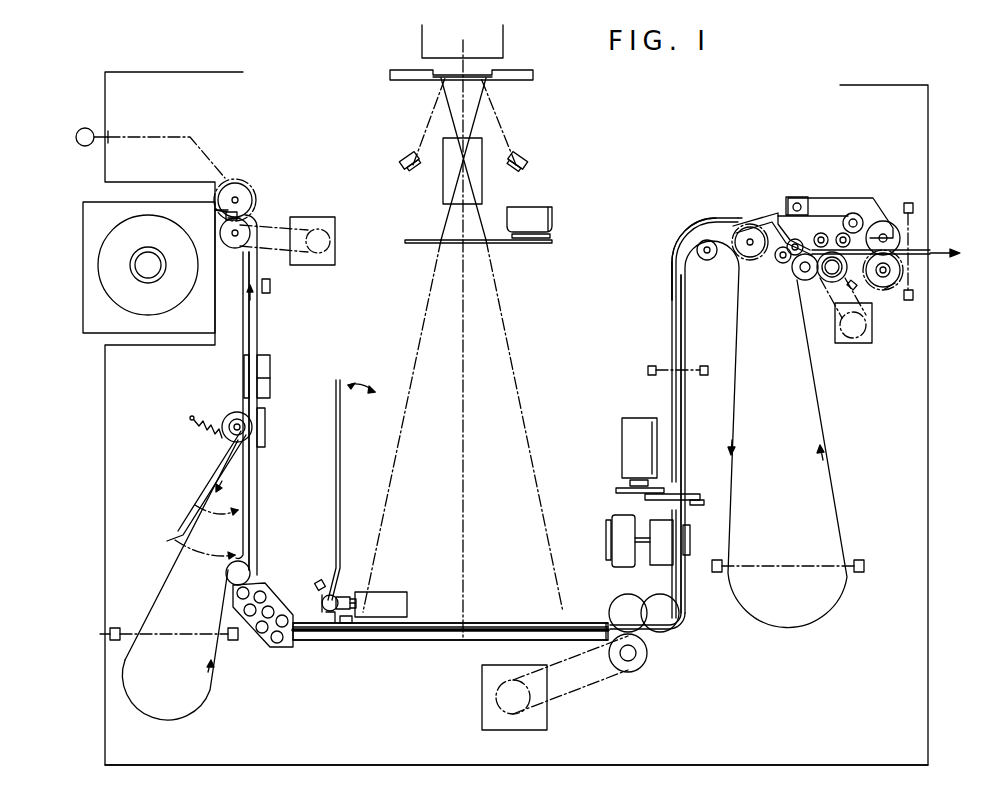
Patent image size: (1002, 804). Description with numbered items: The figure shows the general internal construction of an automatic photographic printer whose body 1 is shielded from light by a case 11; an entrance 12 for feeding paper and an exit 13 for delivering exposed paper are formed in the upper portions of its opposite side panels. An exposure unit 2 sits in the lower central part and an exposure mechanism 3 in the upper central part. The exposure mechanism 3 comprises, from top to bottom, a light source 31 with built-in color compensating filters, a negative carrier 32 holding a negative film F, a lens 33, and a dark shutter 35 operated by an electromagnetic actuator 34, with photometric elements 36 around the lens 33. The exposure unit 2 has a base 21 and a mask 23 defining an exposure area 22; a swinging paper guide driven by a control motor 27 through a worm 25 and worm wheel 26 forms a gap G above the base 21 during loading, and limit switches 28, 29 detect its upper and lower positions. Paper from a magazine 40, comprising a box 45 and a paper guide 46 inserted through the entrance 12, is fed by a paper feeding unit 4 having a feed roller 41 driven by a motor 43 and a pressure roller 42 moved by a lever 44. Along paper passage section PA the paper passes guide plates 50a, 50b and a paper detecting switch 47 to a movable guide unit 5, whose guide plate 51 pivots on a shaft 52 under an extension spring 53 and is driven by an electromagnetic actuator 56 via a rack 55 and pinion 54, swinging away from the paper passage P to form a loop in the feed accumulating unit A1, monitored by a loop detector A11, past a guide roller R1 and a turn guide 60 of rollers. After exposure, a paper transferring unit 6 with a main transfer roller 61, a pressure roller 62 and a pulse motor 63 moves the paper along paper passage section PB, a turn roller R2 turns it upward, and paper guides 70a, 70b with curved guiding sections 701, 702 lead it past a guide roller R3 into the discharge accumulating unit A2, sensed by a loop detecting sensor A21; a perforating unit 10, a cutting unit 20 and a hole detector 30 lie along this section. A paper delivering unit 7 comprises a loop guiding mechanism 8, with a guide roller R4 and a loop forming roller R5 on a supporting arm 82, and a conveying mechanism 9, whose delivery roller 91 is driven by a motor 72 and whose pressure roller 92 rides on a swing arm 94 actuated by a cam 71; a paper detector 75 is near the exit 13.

The body 1 is at (950, 152).
The exposure unit 2 is at (407, 650).
The exposure mechanism 3 is at (553, 183).
The paper feeding unit 4 is at (275, 197).
The movable guide unit 5 is at (288, 418).
The paper transferring unit 6 is at (665, 668).
The paper delivering unit 7 is at (752, 185).
The loop guiding mechanism 8 is at (766, 255).
The conveying mechanism 9 is at (893, 302).
The perforating unit 10 is at (603, 538).
The case 11 is at (105, 428).
The entrance 12 is at (222, 210).
The exit 13 is at (930, 252).
The cutting unit 20 is at (618, 452).
The base 21 is at (447, 640).
The exposure area 22 is at (540, 613).
The mask 23 is at (585, 626).
The worm 25 is at (345, 596).
The worm wheel 26 is at (323, 603).
The control motor 27 is at (386, 592).
The limit switch 28 is at (318, 580).
The limit switch 29 is at (345, 624).
The sensor 30 is at (648, 372).
The light source 31 is at (505, 40).
The negative carrier 32 is at (395, 80).
The lens 33 is at (482, 160).
The electromagnetic actuator 34 is at (553, 221).
The dark shutter 35 is at (420, 244).
The photometric elements 36 is at (416, 170).
The magazine 40 is at (78, 290).
The feed roller 41 is at (232, 248).
The pressure roller 42 is at (247, 192).
The motor 43 is at (335, 241).
The lever 44 is at (76, 137).
The box 45 is at (83, 219).
The paper guide 46 is at (222, 207).
The paper detecting switch 47 is at (270, 286).
The guide plate 50a is at (244, 367).
The guide plate 50b is at (270, 368).
The guide plate 51 is at (205, 515).
The shaft 52 is at (228, 420).
The extension spring 53 is at (212, 438).
The pinion 54 is at (236, 414).
The rack 55 is at (265, 440).
The electromagnetic actuator 56 is at (270, 392).
The turn guide 60 is at (266, 648).
The main transfer roller 61 is at (630, 672).
The pressure roller 62 is at (622, 604).
The pulse motor 63 is at (515, 730).
The paper guide 70a is at (672, 335).
The paper guide 70b is at (686, 335).
The curved guiding section 701 is at (698, 220).
The curved guiding section 702 is at (676, 262).
The cam 71 is at (830, 284).
The motor 72 is at (855, 344).
The paper detector 75 is at (913, 208).
The supporting arm 82 is at (806, 200).
The delivery roller 91 is at (900, 274).
The pressure roller 92 is at (885, 222).
The swing arm 94 is at (852, 198).
The feed accumulating unit A1 is at (187, 622).
The loop detector A11 is at (144, 633).
The discharge accumulating unit A2 is at (786, 550).
The loop detecting sensor A21 is at (859, 560).
The negative film F is at (440, 76).
The gap G is at (440, 627).
The paper passage P is at (252, 500).
The paper passage section PA is at (258, 324).
The paper passage section PB is at (684, 390).
The guide roller R1 is at (248, 572).
The turn roller R2 is at (675, 618).
The guide roller R3 is at (709, 261).
The guide roller R4 is at (803, 281).
The loop forming roller R5 is at (742, 229).